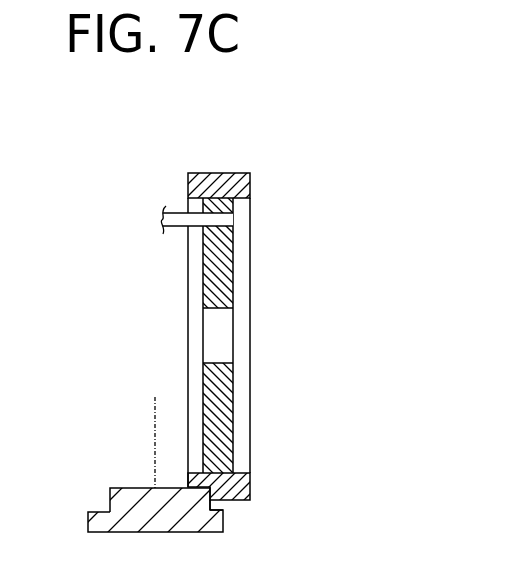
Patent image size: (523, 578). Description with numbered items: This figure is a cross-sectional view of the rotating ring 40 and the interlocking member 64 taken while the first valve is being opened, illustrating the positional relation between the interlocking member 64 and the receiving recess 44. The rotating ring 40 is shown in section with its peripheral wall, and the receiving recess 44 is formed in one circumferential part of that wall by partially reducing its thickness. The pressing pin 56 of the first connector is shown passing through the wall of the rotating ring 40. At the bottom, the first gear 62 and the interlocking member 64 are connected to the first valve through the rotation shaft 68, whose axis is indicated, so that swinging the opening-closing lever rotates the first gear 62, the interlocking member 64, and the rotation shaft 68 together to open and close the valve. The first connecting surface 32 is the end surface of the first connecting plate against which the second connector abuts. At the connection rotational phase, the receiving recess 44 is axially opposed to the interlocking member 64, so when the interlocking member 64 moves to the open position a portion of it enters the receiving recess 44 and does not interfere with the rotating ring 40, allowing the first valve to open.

The first connecting surface 32 is at (233, 265).
The rotating ring 40 is at (228, 173).
The receiving recess 44 is at (212, 502).
The pressing pin 56 is at (238, 216).
The first gear 62 is at (88, 522).
The interlocking member 64 is at (110, 497).
The rotation shaft 68 is at (155, 427).